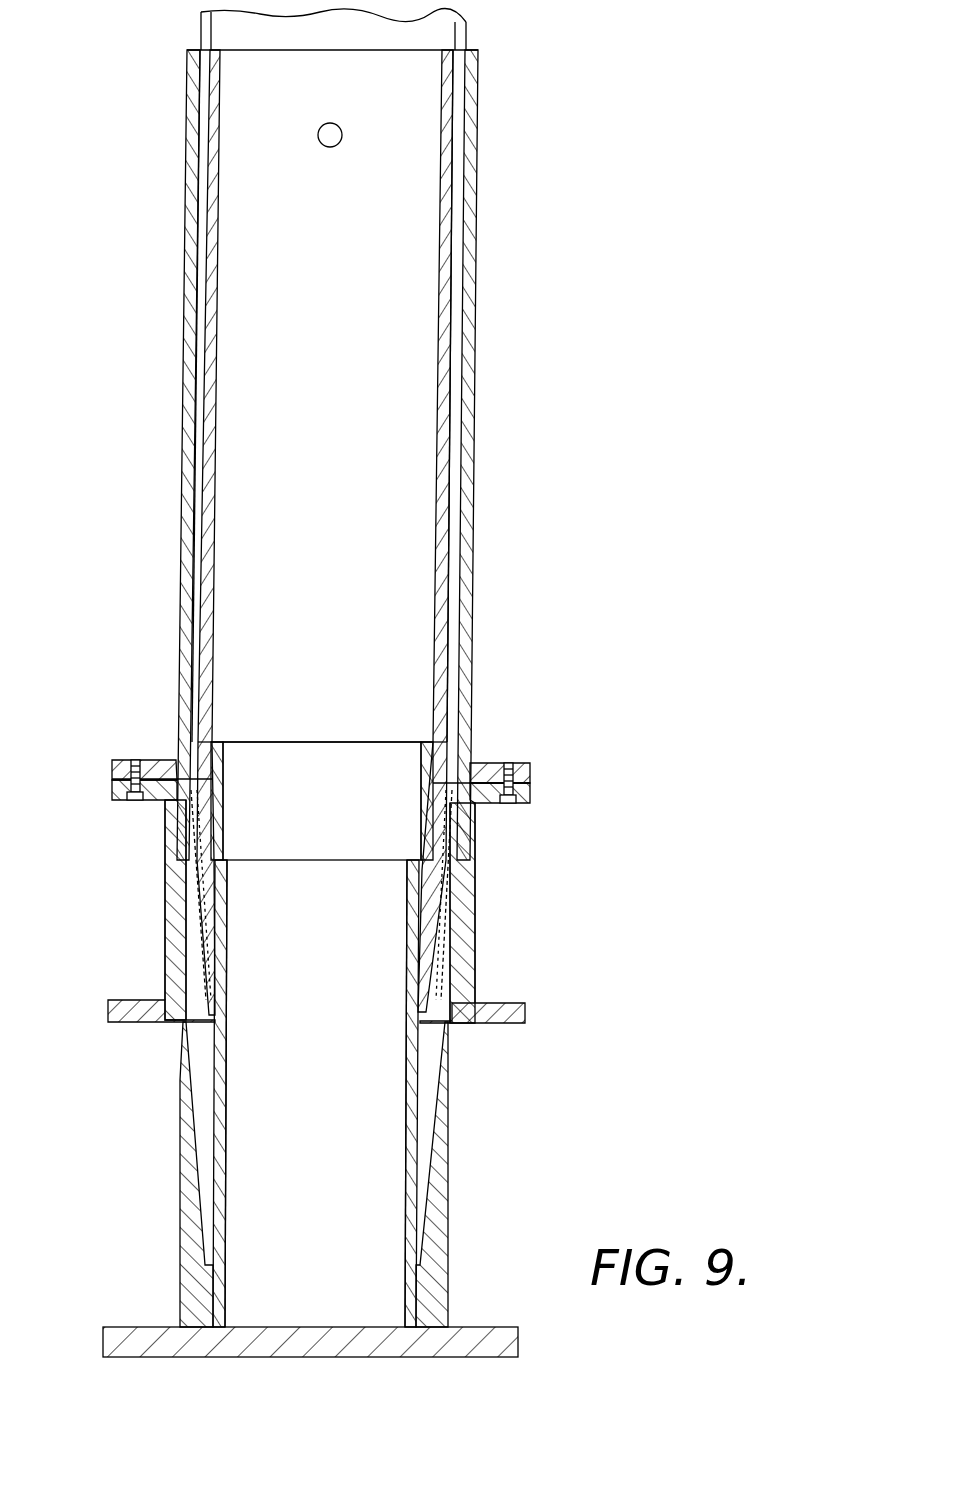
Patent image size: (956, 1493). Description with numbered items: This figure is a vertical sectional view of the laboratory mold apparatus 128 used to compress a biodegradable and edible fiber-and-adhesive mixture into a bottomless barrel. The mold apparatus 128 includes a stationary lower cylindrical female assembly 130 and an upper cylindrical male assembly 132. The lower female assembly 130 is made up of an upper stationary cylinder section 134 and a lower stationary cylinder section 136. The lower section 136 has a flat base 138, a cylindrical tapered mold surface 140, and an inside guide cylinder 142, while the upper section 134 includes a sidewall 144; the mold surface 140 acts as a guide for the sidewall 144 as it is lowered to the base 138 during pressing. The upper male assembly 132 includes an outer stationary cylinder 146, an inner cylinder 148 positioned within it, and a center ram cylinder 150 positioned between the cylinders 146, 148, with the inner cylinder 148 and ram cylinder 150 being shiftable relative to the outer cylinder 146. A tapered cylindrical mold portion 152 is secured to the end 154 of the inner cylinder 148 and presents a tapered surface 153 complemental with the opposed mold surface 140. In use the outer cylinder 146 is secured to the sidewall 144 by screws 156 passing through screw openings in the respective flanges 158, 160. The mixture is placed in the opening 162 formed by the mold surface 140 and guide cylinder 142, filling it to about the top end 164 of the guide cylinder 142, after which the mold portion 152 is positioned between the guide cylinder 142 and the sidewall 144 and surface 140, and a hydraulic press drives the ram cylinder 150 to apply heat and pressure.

The mold apparatus 128 is at (636, 605).
The lower cylindrical female assembly 130 is at (586, 1043).
The upper cylindrical male assembly 132 is at (544, 296).
The upper stationary cylinder section 134 is at (594, 895).
The lower stationary cylinder section 136 is at (532, 1150).
The flat base 138 is at (515, 1340).
The cylindrical tapered mold surface 140 is at (432, 1202).
The inside guide cylinder 142 is at (410, 1172).
The sidewall 144 is at (476, 962).
The outer stationary cylinder 146 is at (476, 262).
The inner cylinder 148 is at (440, 293).
The center ram cylinder 150 is at (462, 40).
The tapered cylindrical mold portion 152 is at (432, 805).
The tapered surface 153 is at (472, 880).
The end 154 is at (436, 706).
The screws 156 is at (135, 760).
The flange 158 is at (531, 796).
The flange 160 is at (531, 778).
The opening 162 is at (412, 1069).
The top end 164 is at (418, 896).